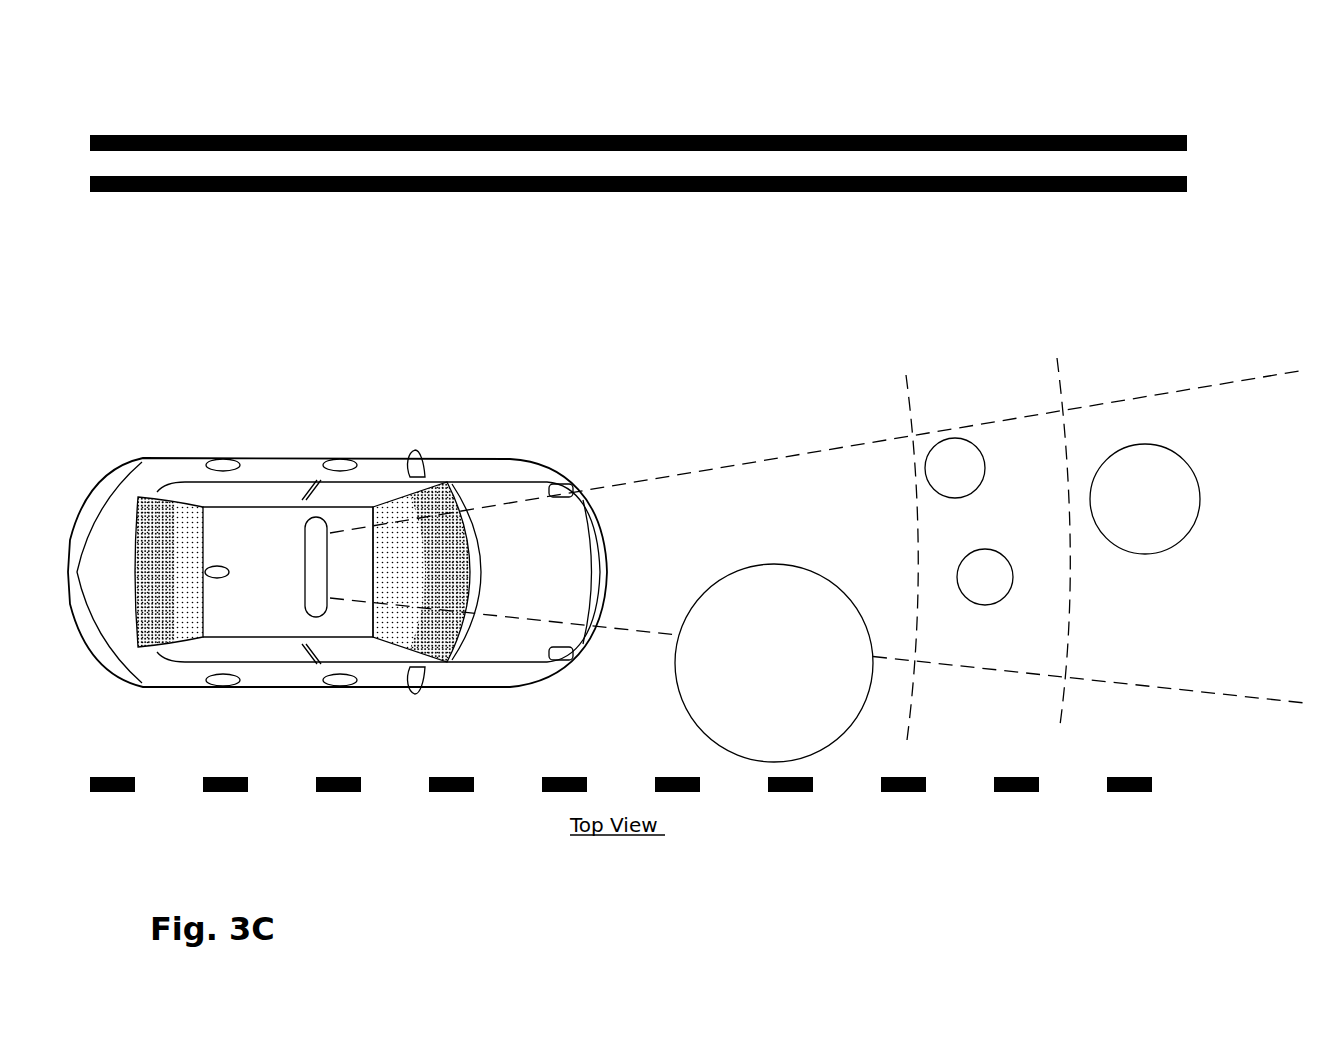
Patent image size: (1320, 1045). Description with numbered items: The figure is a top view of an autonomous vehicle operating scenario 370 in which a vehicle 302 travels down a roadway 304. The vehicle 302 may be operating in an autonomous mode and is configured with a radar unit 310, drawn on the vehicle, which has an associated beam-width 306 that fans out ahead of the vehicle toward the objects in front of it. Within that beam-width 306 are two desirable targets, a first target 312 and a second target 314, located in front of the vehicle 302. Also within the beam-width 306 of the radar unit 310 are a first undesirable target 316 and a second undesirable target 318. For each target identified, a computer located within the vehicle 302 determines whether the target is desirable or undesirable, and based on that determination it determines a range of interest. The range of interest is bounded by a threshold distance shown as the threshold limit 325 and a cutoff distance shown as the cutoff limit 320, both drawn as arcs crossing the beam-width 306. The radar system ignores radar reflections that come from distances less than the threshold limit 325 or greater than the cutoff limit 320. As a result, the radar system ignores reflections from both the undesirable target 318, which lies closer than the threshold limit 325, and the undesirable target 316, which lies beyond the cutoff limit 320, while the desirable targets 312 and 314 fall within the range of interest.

The scenario 370 is at (362, 101).
The roadway 304 is at (543, 203).
The vehicle 302 is at (513, 462).
The radar unit 310 is at (312, 547).
The beam-width 306 is at (638, 485).
The threshold limit 325 is at (907, 385).
The cutoff limit 320 is at (1058, 368).
The second undesirable target 318 is at (855, 604).
The first target 312 is at (966, 438).
The second target 314 is at (994, 548).
The first undesirable target 316 is at (1198, 517).